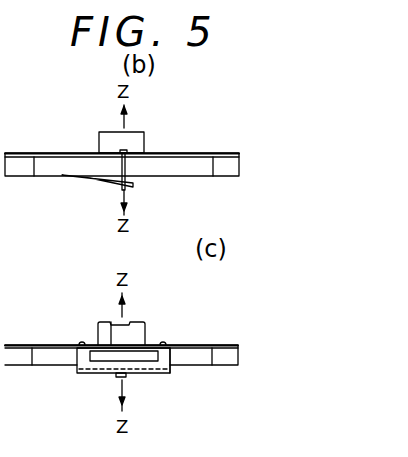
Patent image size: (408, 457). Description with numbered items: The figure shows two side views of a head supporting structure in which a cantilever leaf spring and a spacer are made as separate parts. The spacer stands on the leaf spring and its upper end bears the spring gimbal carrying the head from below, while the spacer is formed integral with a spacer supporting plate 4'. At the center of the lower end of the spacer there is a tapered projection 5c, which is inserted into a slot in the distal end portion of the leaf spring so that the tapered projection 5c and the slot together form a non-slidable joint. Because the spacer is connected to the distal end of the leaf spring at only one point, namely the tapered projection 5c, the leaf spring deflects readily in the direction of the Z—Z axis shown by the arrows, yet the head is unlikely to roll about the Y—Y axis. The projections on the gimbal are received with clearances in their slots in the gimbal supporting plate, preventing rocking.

The spacer supporting plate 4' is at (197, 387).
The tapered projection 5c is at (125, 377).